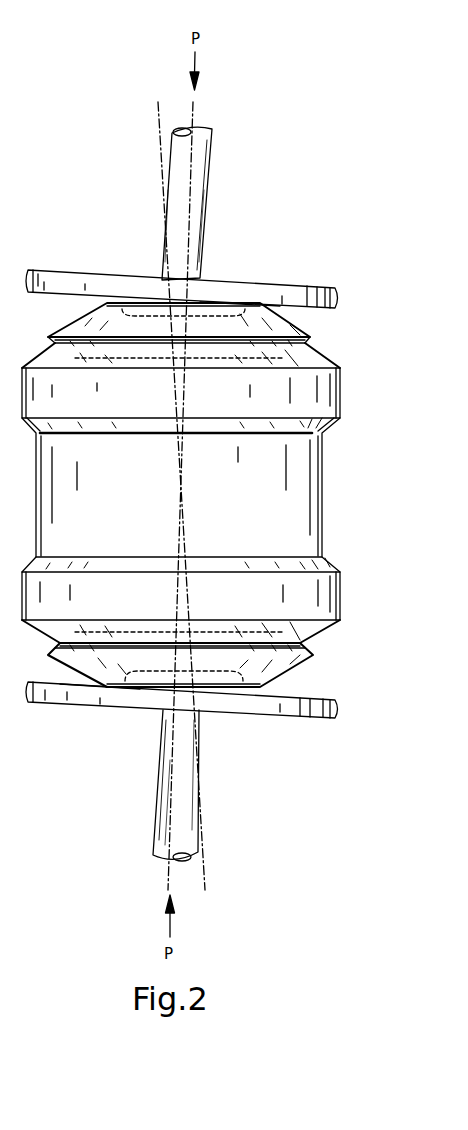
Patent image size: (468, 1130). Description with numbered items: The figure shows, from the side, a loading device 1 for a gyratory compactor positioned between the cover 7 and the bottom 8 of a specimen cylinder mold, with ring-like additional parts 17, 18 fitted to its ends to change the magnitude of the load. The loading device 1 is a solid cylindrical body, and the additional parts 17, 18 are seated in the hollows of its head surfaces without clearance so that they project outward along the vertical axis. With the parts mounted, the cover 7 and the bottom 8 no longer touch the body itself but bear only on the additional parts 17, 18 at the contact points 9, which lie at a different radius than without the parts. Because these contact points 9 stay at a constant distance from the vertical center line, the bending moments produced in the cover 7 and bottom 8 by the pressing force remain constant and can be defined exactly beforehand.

The loading device 1 is at (268, 489).
The cover 7 is at (217, 281).
The bottom 8 is at (293, 708).
The contact points 9 is at (258, 301).
The additional part 17 is at (282, 321).
The additional part 18 is at (260, 667).